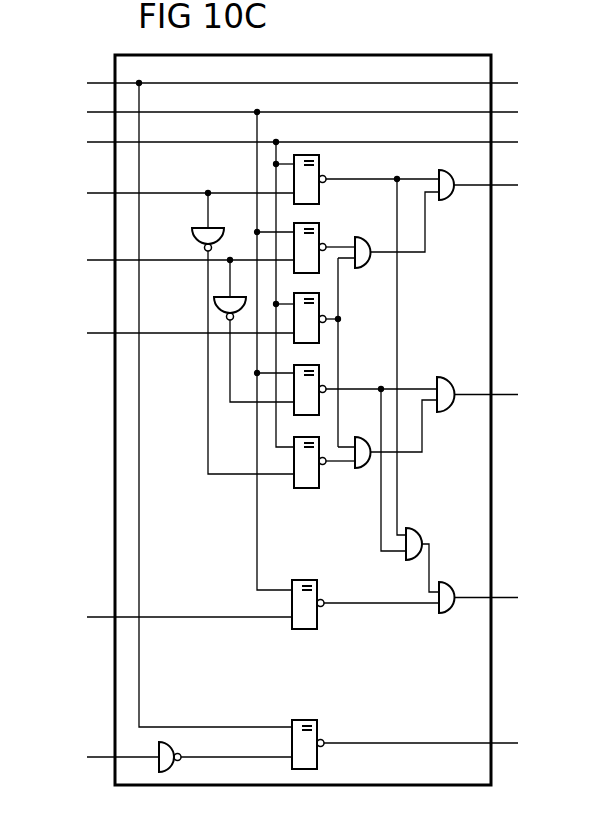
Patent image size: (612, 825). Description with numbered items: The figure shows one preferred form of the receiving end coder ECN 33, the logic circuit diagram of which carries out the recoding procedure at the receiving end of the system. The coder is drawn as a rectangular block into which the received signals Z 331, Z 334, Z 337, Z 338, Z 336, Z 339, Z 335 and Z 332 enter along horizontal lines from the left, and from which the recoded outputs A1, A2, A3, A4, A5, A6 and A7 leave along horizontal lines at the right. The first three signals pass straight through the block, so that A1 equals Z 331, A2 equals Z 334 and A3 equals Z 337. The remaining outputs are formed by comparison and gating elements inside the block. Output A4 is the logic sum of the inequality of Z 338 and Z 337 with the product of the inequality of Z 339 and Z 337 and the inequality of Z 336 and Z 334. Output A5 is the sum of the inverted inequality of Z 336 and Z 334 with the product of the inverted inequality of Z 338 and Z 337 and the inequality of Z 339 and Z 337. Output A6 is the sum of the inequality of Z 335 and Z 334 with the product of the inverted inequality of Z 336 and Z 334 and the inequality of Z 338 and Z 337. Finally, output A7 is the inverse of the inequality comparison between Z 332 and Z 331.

The receiving end coder ECN 33 is at (462, 55).
The input signal Z331 331 is at (274, 399).
The input signal Z334 334 is at (274, 345).
The input signal Z337 337 is at (274, 289).
The input signal Z338 338 is at (162, 328).
The input signal Z336 336 is at (162, 325).
The input signal Z339 339 is at (162, 334).
The input signal Z335 335 is at (161, 618).
The input signal Z332 332 is at (161, 757).
The output A1 is at (542, 84).
The output A2 is at (542, 113).
The output A3 is at (542, 143).
The output A4 is at (504, 186).
The output A5 is at (505, 395).
The output A6 is at (505, 598).
The output A7 is at (439, 744).